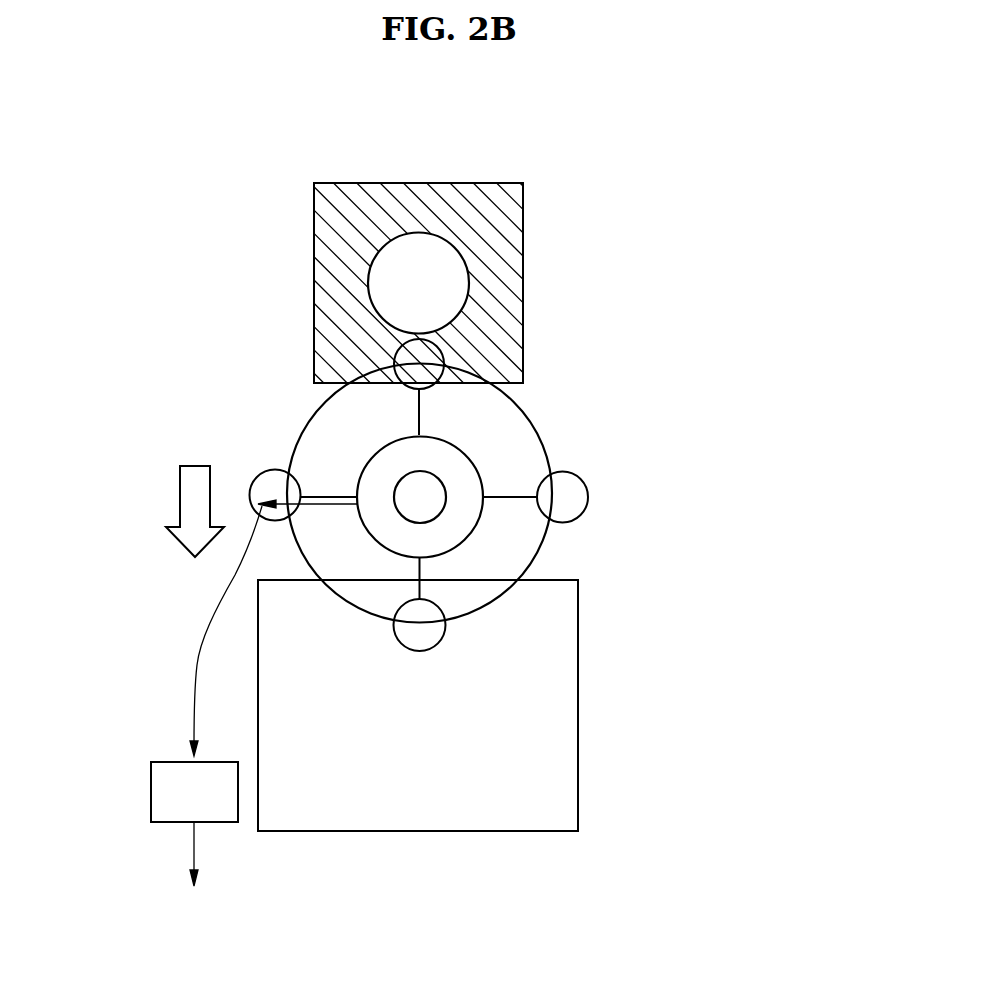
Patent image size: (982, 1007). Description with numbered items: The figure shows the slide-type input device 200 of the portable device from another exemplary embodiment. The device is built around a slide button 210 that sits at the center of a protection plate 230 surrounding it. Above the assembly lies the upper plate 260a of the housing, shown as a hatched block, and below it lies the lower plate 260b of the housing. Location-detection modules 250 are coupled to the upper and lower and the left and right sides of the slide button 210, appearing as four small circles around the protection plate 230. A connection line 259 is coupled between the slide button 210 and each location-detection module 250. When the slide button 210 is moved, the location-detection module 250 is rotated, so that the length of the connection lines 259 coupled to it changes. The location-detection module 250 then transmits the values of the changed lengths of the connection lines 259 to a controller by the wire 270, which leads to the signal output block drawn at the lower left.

The input device 200 is at (548, 151).
The upper plate 260a is at (515, 223).
The lower plate 260b is at (572, 743).
The protection plate 230 is at (462, 457).
The slide button 210 is at (437, 503).
The location-detection module 250 is at (272, 478).
The connection line 259 is at (343, 492).
The wire 270 is at (200, 652).